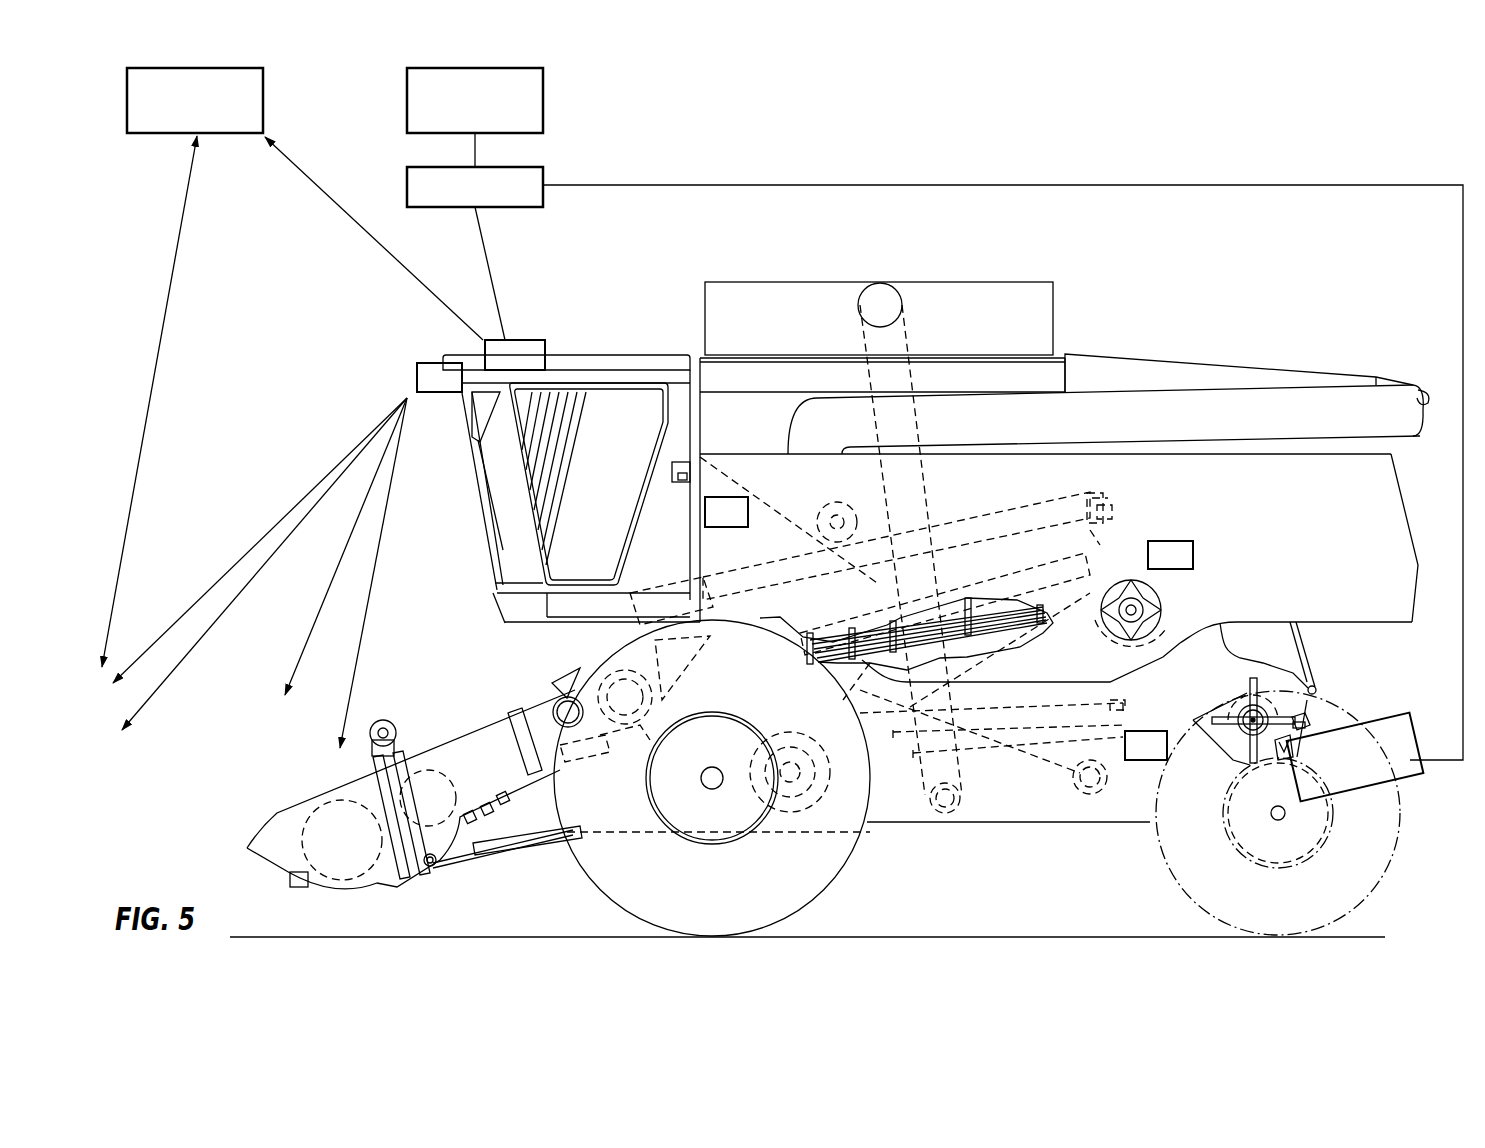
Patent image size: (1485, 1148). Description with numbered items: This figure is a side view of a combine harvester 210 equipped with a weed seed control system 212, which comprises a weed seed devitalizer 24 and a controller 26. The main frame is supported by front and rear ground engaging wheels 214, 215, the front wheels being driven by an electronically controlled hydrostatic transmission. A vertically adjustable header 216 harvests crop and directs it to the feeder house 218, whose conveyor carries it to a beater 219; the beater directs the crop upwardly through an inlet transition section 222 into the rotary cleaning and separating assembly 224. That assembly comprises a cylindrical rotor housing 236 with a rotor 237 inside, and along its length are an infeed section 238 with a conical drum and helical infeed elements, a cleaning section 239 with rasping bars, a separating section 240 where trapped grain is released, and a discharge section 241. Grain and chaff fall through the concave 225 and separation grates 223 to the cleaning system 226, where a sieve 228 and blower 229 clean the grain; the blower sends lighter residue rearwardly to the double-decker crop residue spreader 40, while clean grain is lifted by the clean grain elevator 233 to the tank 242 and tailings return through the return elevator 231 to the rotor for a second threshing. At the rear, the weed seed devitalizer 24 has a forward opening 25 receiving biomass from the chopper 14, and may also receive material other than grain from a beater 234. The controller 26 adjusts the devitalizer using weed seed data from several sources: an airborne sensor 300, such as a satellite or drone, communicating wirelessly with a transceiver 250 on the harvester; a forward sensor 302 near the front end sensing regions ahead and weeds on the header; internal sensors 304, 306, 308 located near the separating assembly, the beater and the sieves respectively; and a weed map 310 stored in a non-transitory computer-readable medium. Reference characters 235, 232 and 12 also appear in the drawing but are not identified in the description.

The airborne sensor 300 is at (263, 107).
The weed map 310 is at (407, 103).
The weed seed control system 212 is at (557, 170).
The controller 26 is at (543, 195).
The harvester 210 is at (1328, 273).
The transceiver 235 is at (572, 353).
The transceiver 250 is at (547, 368).
The forward sensor 302 is at (417, 370).
The tank 242 is at (1068, 372).
The internal sensor 304 is at (740, 497).
The clean grain elevator 233 is at (922, 446).
The rotor housing 236 is at (1040, 475).
The discharge section 241 is at (1088, 480).
The rotor 237 is at (1058, 510).
The cleaning system 232 is at (1110, 545).
The internal sensor 306 is at (1193, 557).
The beater 234 is at (1161, 586).
The chopper 14 is at (1225, 700).
The cleaning section 239 is at (798, 553).
The separating section 240 is at (958, 520).
The infeed section 238 is at (663, 583).
The rotary cleaning and separating assembly 224 is at (782, 583).
The inlet transition section 222 is at (627, 647).
The beater 219 is at (597, 663).
The front ground engaging wheel 214 is at (580, 680).
The header 216 is at (303, 777).
The feeder house 218 is at (478, 735).
The separation grates 223 is at (987, 633).
The cleaning system 226 is at (1070, 682).
The concave 225 is at (810, 677).
The blower 229 is at (783, 806).
The return elevator 231 is at (1112, 750).
The sieve 228 is at (1145, 770).
The internal sensor 308 is at (1153, 762).
The rear ground engaging wheel 215 is at (1400, 827).
The hub 12 is at (1258, 670).
The double-decker crop residue spreader 40 is at (1310, 664).
The weed seed devitalizer 24 is at (1405, 705).
The forward opening 25 is at (1300, 723).